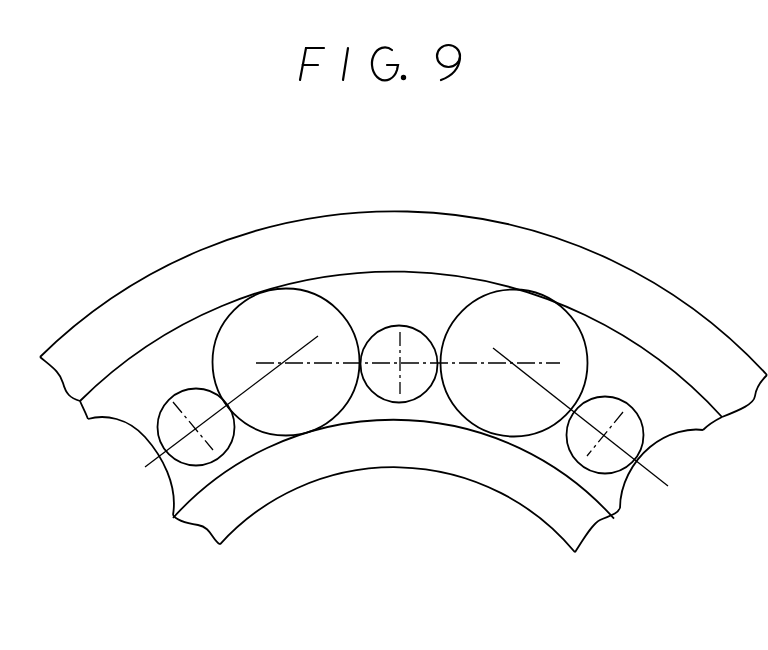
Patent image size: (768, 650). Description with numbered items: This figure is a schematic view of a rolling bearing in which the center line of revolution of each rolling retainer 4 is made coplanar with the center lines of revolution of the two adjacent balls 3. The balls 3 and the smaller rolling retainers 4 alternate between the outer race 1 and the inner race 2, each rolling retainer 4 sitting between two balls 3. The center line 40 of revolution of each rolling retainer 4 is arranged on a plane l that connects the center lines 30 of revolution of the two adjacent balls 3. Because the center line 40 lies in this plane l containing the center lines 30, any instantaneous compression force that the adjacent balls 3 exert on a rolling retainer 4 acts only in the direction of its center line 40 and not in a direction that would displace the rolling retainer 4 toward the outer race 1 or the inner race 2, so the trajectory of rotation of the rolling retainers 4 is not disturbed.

The outer race 1 is at (557, 513).
The inner race 2 is at (570, 273).
The ball 3 is at (260, 307).
The rolling retainer 4 is at (389, 327).
The center line of revolution of ball 30 is at (513, 364).
The center line of revolution of rolling retainer 40 is at (655, 409).
The plane l is at (137, 400).